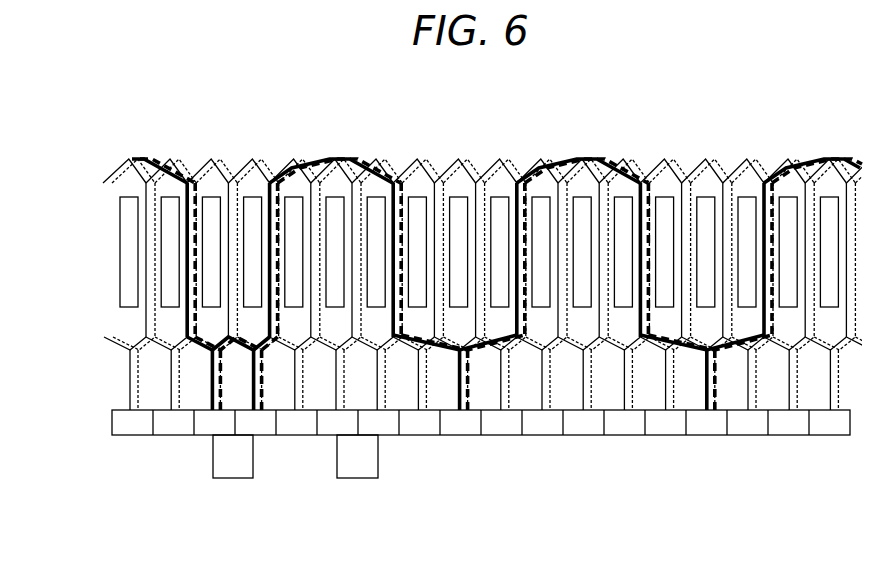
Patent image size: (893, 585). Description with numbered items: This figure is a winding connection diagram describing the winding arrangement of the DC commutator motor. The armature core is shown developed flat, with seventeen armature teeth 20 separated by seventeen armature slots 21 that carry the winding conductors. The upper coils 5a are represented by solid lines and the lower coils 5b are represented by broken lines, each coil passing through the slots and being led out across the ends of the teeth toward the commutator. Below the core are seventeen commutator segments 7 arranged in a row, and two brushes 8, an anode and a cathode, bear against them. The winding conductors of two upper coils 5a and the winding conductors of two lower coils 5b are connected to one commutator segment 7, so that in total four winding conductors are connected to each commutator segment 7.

The upper coil 5a is at (300, 170).
The lower coil 5b is at (352, 158).
The armature tooth 20 is at (623, 212).
The armature slot 21 is at (687, 218).
The commutator segment 7 is at (112, 436).
The brush 8 is at (225, 480).